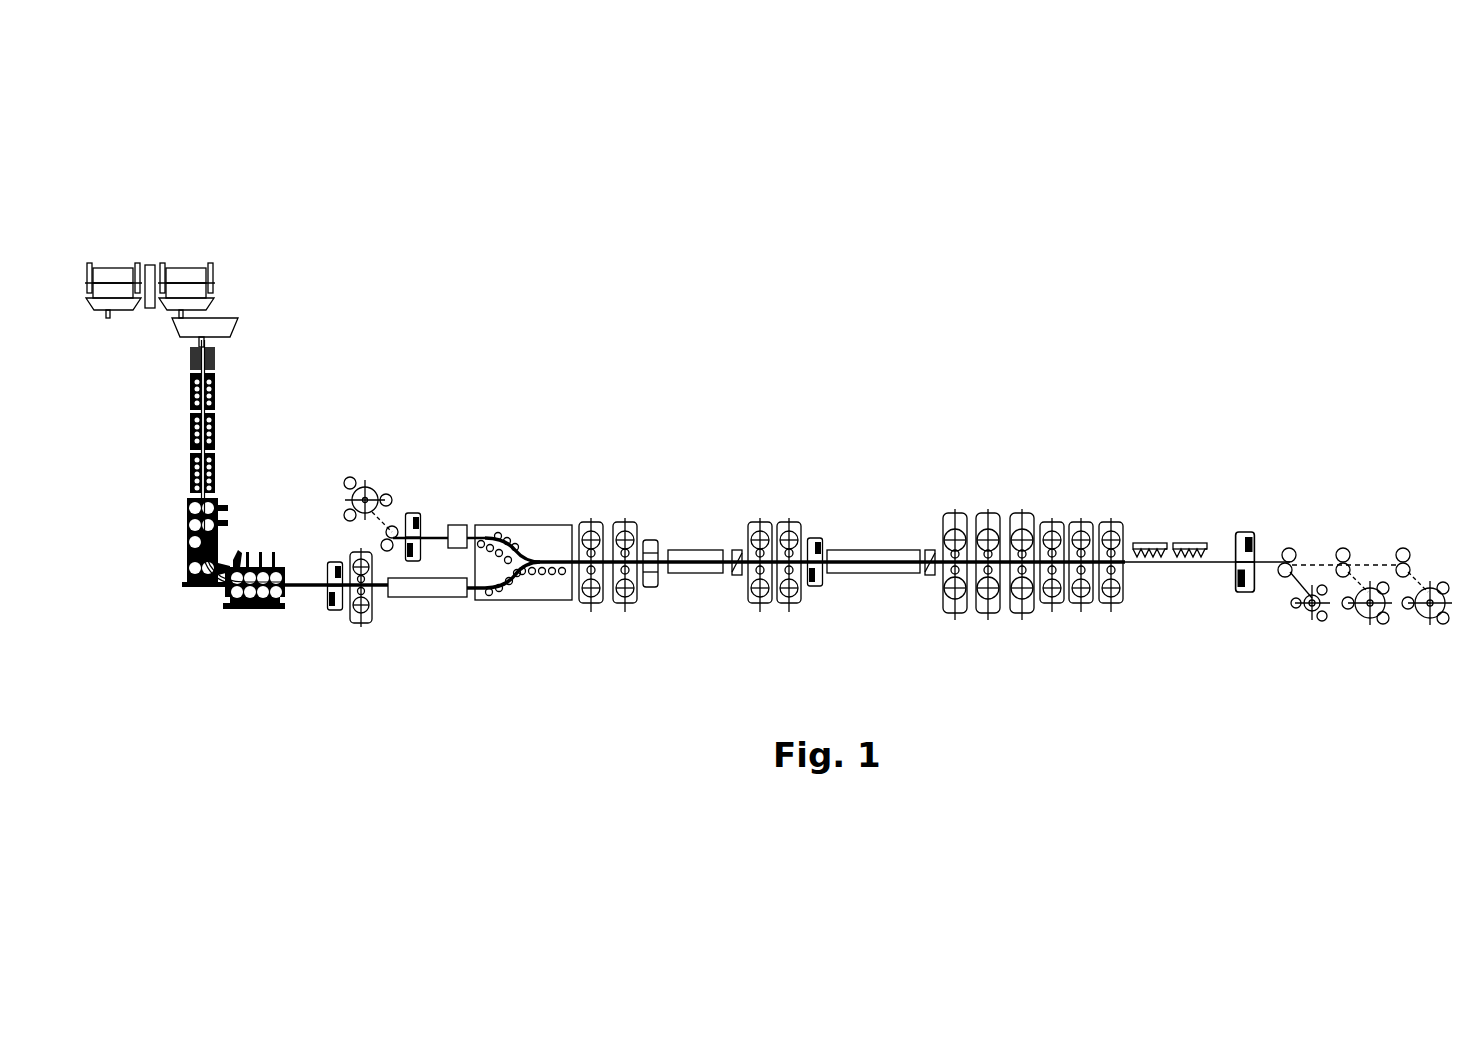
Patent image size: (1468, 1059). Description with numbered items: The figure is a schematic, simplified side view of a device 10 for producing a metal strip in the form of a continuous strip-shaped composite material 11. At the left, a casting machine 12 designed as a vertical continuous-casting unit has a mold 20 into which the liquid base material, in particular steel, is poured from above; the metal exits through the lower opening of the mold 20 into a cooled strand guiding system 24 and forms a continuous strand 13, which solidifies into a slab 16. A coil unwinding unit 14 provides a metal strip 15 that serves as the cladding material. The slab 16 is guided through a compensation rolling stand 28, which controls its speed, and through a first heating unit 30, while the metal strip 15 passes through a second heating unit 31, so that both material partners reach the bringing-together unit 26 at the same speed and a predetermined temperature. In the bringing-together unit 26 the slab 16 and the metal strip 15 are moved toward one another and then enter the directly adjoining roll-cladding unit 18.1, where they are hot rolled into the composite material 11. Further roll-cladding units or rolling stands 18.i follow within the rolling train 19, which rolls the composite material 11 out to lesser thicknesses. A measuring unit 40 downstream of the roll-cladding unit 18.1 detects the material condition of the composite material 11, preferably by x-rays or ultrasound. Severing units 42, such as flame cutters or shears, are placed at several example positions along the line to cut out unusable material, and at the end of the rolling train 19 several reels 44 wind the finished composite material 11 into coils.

The device 10 is at (1270, 236).
The continuous strip-shaped composite material 11 is at (608, 565).
The casting machine 12 is at (145, 236).
The strand 13 is at (187, 492).
The coil unwinding unit 14 is at (330, 476).
The metal strip 15 is at (433, 536).
The slab 16 is at (298, 590).
The roll-cladding unit 18.1 is at (594, 523).
The further roll-cladding unit 18.i is at (628, 523).
The rolling train 19 is at (1037, 490).
The mold 20 is at (214, 357).
The strand guiding system 24 is at (188, 430).
The bringing-together unit 26 is at (559, 523).
The compensation rolling stand 28 is at (362, 624).
The first heating unit 30 is at (435, 598).
The second heating unit 31 is at (458, 524).
The measuring unit 40 is at (664, 540).
The severing unit 42 is at (413, 516).
The reel 44 is at (1392, 541).